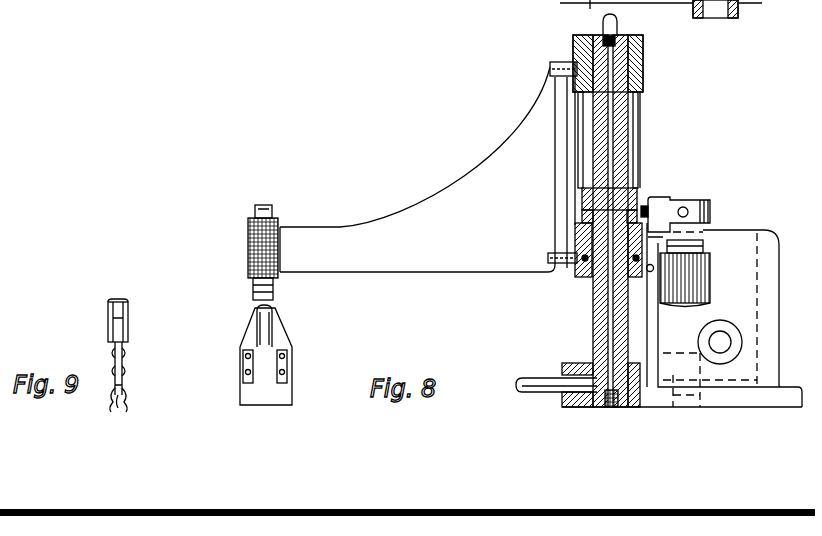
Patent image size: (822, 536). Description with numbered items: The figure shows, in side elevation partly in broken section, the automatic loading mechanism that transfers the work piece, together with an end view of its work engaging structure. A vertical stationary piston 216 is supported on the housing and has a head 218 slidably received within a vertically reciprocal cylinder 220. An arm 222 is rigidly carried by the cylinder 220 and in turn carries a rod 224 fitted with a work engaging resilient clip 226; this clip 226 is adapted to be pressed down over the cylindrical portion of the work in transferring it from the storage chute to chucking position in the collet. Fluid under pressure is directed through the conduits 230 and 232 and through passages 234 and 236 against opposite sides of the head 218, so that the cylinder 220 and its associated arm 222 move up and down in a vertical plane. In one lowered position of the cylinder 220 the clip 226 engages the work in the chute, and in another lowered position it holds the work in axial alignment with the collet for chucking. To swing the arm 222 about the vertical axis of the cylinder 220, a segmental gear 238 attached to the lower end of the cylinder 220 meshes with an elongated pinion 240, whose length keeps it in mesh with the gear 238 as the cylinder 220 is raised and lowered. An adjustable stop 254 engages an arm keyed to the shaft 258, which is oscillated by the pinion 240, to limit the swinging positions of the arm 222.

In FIG. 8, the vertical stationary piston 216 is at (595, 290).
In FIG. 8, the head 218 is at (648, 188).
In FIG. 8, the vertically reciprocal cylinder 220 is at (641, 118).
In FIG. 8, the arm 222 is at (412, 210).
In FIG. 8, the rod 224 is at (266, 322).
In FIG. 9, the rod 224 is at (130, 310).
In FIG. 8, the work engaging resilient clip 226 is at (288, 372).
In FIG. 9, the work engaging resilient clip 226 is at (128, 372).
In FIG. 8, the conduit 230 is at (520, 378).
In FIG. 8, the conduit 232 is at (613, 22).
In FIG. 8, the passage 234 is at (612, 345).
In FIG. 8, the passage 236 is at (609, 150).
In FIG. 8, the segmental gear 238 is at (588, 3).
In FIG. 8, the elongated pinion 240 is at (697, 290).
In FIG. 8, the adjustable stop 254 is at (660, 202).
In FIG. 8, the shaft 258 is at (713, 222).